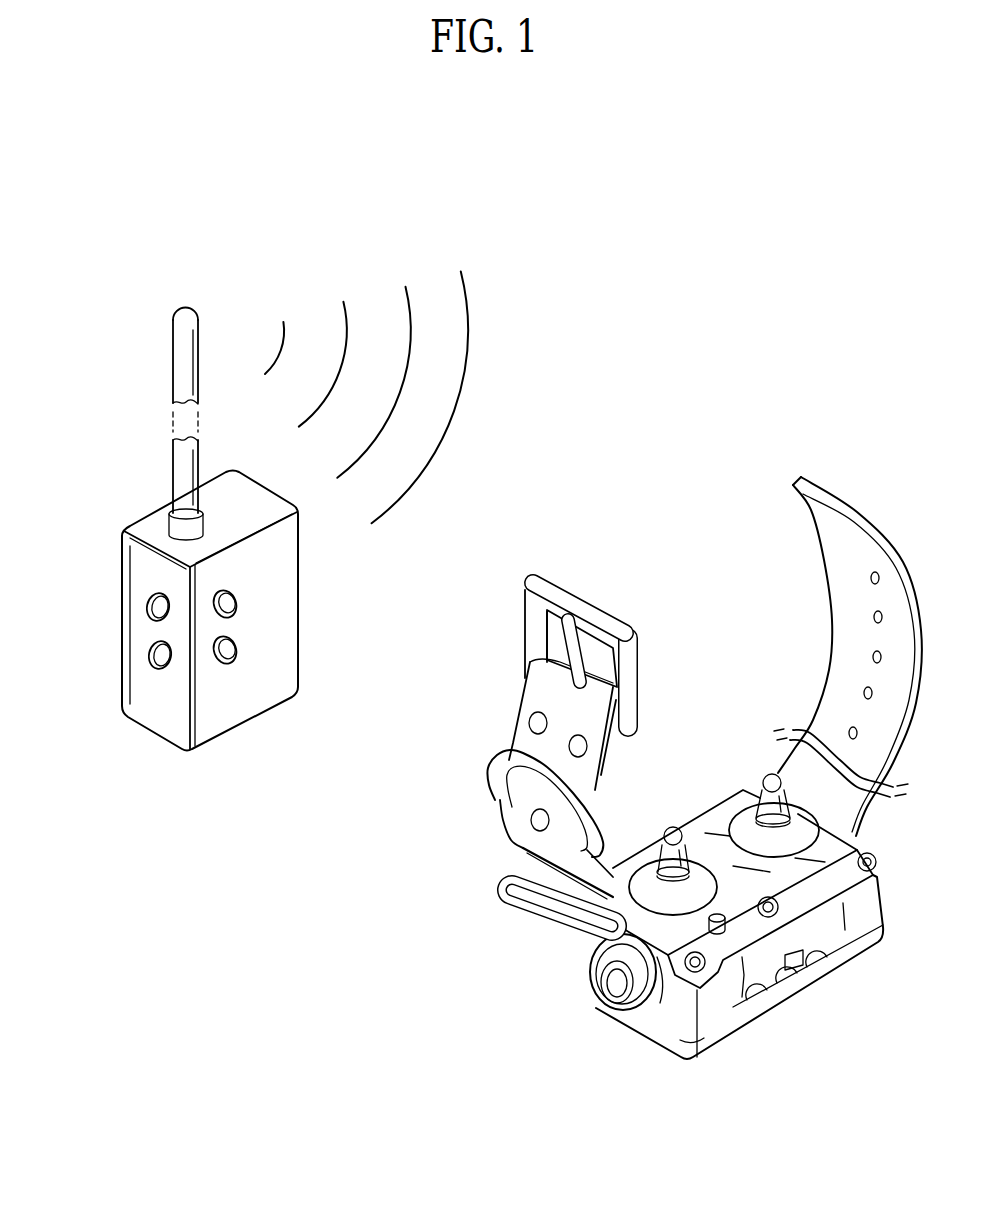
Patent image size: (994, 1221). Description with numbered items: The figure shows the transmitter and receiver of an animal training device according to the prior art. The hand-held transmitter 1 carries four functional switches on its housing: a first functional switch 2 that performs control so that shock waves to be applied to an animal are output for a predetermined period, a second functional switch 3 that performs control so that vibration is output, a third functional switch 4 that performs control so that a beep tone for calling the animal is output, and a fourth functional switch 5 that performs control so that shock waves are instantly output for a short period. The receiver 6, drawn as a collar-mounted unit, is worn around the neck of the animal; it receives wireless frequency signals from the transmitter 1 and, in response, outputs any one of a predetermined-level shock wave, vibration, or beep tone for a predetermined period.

The transmitter 1 is at (198, 529).
The first functional switch 2 is at (232, 597).
The second functional switch 3 is at (232, 650).
The third functional switch 4 is at (150, 608).
The fourth functional switch 5 is at (152, 655).
The receiver 6 is at (537, 983).